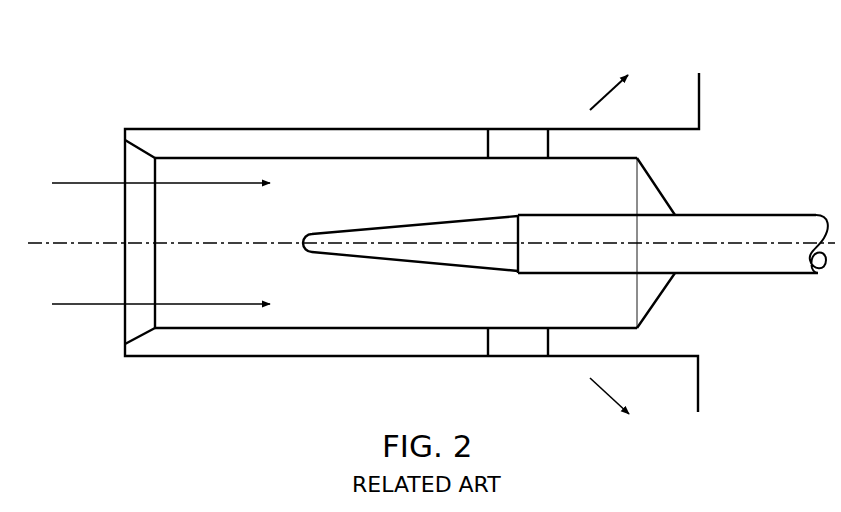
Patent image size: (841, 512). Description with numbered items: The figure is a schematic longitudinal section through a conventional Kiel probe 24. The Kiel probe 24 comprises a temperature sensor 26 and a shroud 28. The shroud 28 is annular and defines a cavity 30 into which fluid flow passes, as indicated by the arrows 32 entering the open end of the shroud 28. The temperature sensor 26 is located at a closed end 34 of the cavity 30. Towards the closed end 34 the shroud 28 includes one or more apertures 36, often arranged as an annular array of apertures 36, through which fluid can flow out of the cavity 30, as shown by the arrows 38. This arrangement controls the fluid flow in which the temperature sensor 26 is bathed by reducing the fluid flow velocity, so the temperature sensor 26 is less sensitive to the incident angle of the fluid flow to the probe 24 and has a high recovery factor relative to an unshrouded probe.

The Kiel probe 24 is at (150, 118).
The temperature sensor 26 is at (477, 255).
The shroud 28 is at (358, 142).
The cavity 30 is at (398, 204).
The arrows 32 is at (80, 305).
The closed end 34 is at (655, 196).
The apertures 36 is at (508, 118).
The arrows 38 is at (600, 95).